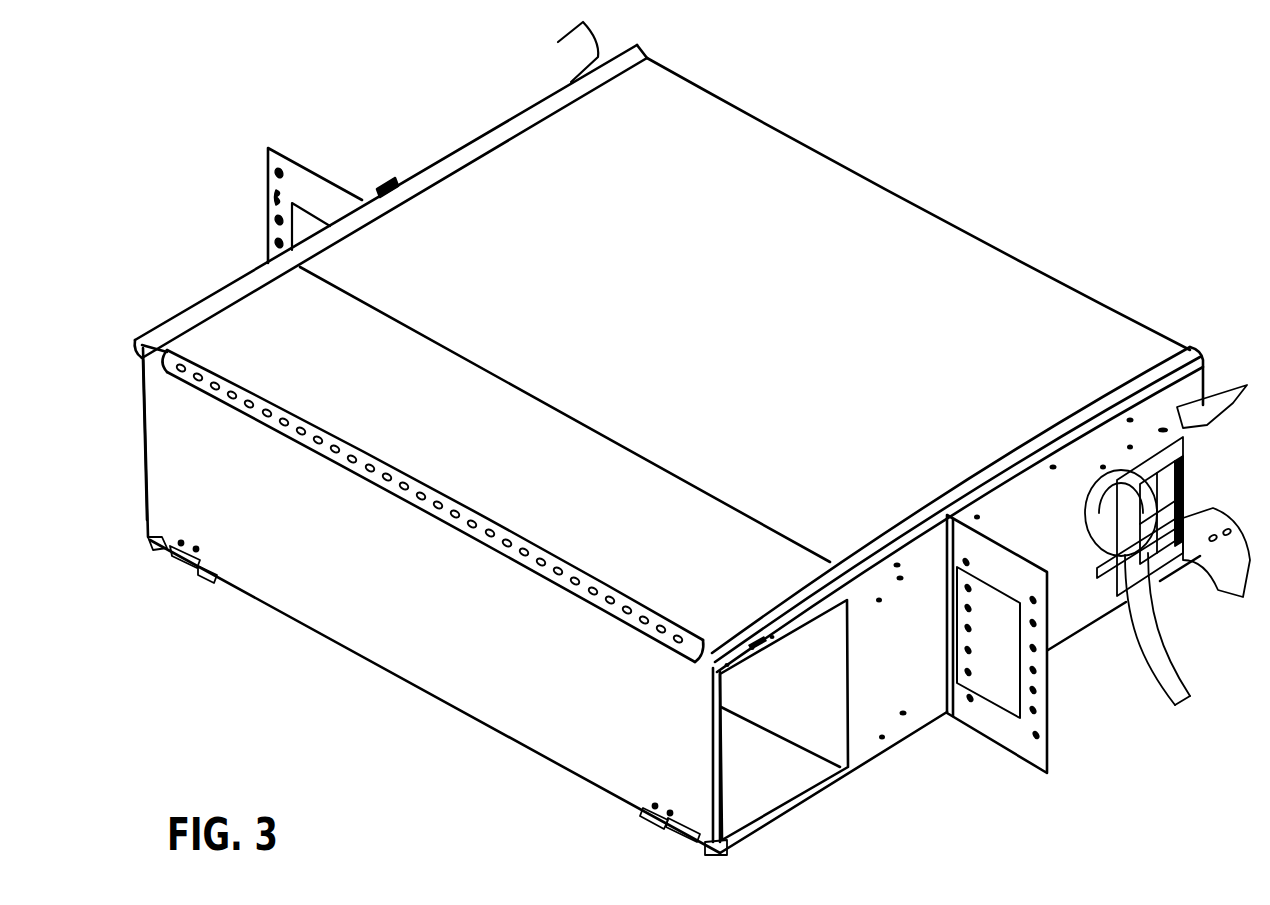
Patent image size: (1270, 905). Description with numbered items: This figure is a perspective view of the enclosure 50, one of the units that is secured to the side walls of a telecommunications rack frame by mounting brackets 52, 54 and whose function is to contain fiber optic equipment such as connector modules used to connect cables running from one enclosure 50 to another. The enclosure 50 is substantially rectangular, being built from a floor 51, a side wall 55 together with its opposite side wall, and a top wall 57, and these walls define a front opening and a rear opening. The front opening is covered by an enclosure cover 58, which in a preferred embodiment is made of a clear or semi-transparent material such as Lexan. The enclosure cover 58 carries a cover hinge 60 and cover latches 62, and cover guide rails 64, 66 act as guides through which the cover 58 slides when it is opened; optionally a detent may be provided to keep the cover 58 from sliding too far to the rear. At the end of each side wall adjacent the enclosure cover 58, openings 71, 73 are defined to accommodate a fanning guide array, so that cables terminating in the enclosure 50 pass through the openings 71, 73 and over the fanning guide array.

The enclosure 50 is at (893, 138).
The floor 51 is at (808, 693).
The mounting bracket 52 is at (1025, 742).
The mounting bracket 54 is at (276, 170).
The side wall 55 is at (437, 133).
The top wall 57 is at (727, 137).
The enclosure cover 58 is at (170, 407).
The cover hinge 60 is at (222, 370).
The cover latches 62 is at (188, 560).
The cover guide rail 64 is at (1018, 453).
The cover guide rail 66 is at (525, 113).
The opening 71 is at (757, 762).
The opening 73 is at (132, 448).